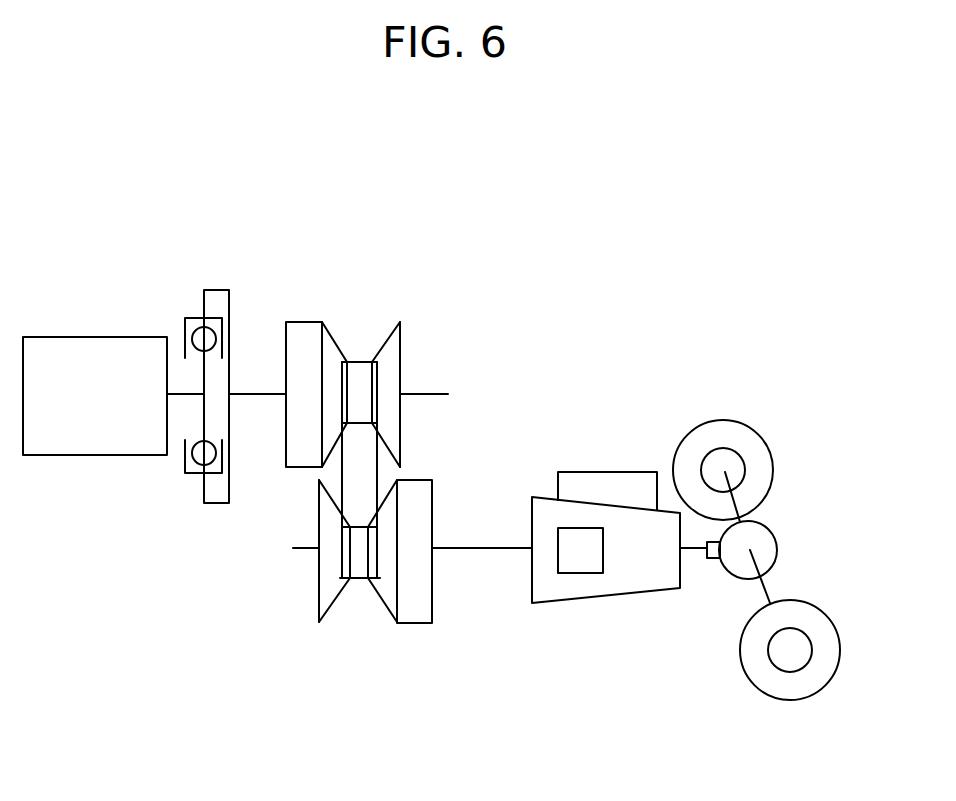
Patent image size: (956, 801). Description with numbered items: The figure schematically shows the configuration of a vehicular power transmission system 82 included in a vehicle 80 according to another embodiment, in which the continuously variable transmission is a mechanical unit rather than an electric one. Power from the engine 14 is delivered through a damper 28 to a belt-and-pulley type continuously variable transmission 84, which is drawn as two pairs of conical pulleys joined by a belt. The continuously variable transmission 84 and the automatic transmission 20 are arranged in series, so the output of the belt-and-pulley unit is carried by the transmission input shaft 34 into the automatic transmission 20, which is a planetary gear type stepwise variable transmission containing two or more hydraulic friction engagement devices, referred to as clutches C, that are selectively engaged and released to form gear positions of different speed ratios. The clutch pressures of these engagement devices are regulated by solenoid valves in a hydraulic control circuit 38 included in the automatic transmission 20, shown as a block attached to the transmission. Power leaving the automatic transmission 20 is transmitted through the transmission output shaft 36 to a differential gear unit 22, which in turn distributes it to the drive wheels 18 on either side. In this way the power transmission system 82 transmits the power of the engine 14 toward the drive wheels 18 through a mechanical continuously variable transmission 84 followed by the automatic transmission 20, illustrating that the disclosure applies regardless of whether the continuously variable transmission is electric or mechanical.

The engine 14 is at (55, 437).
The drive wheels 18 is at (760, 455).
The automatic transmission 20 is at (608, 582).
The differential gear unit 22 is at (762, 545).
The damper 28 is at (192, 477).
The transmission input shaft 34 is at (480, 553).
The transmission output shaft 36 is at (693, 552).
The hydraulic control circuit 38 is at (617, 480).
The vehicle 80 is at (640, 222).
The vehicular power transmission system 82 is at (550, 272).
The belt-and-pulley type continuously variable transmission 84 is at (359, 645).